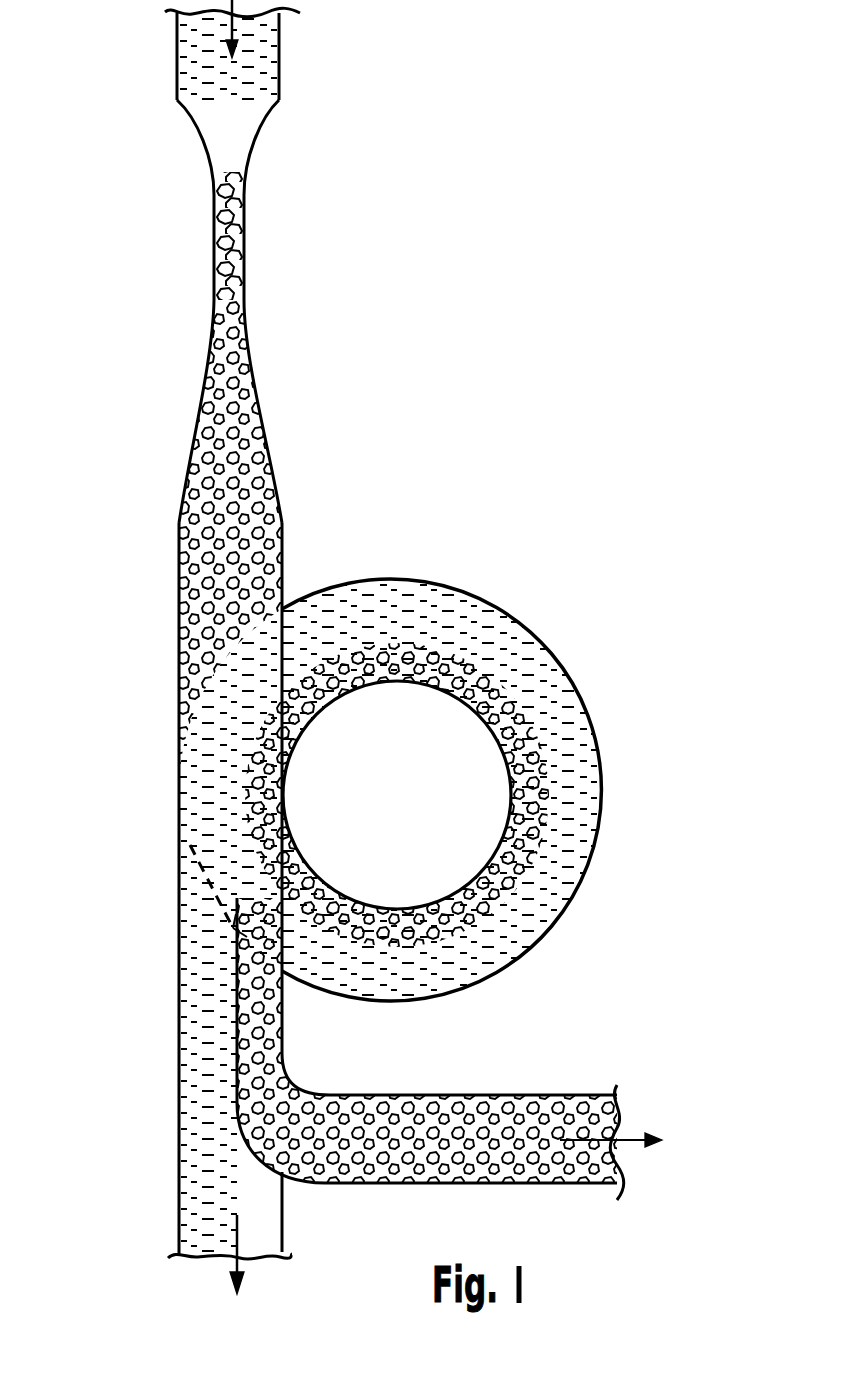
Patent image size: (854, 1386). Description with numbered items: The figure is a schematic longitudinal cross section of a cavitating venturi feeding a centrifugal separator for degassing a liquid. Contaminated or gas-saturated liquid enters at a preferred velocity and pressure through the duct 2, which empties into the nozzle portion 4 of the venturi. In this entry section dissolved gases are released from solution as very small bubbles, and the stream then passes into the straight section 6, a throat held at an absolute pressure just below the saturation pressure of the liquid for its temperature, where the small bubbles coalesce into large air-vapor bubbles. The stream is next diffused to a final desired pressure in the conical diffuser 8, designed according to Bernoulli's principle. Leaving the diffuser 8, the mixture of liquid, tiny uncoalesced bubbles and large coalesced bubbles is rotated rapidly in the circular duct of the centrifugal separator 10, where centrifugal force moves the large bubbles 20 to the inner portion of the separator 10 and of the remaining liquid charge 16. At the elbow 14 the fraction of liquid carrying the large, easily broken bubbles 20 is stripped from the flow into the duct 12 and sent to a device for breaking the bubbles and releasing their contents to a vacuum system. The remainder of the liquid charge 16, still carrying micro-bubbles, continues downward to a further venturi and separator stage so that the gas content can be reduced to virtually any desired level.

The entrance nozzle duct 2 is at (280, 80).
The nozzle portion 4 is at (258, 143).
The straight section 6 is at (248, 243).
The diffuser 8 is at (263, 410).
The centrifugal separator 10 is at (492, 605).
The duct 12 is at (472, 1093).
The elbow 14 is at (293, 1187).
The liquid charge 16 is at (228, 988).
The large bubbles 20 is at (641, 1135).